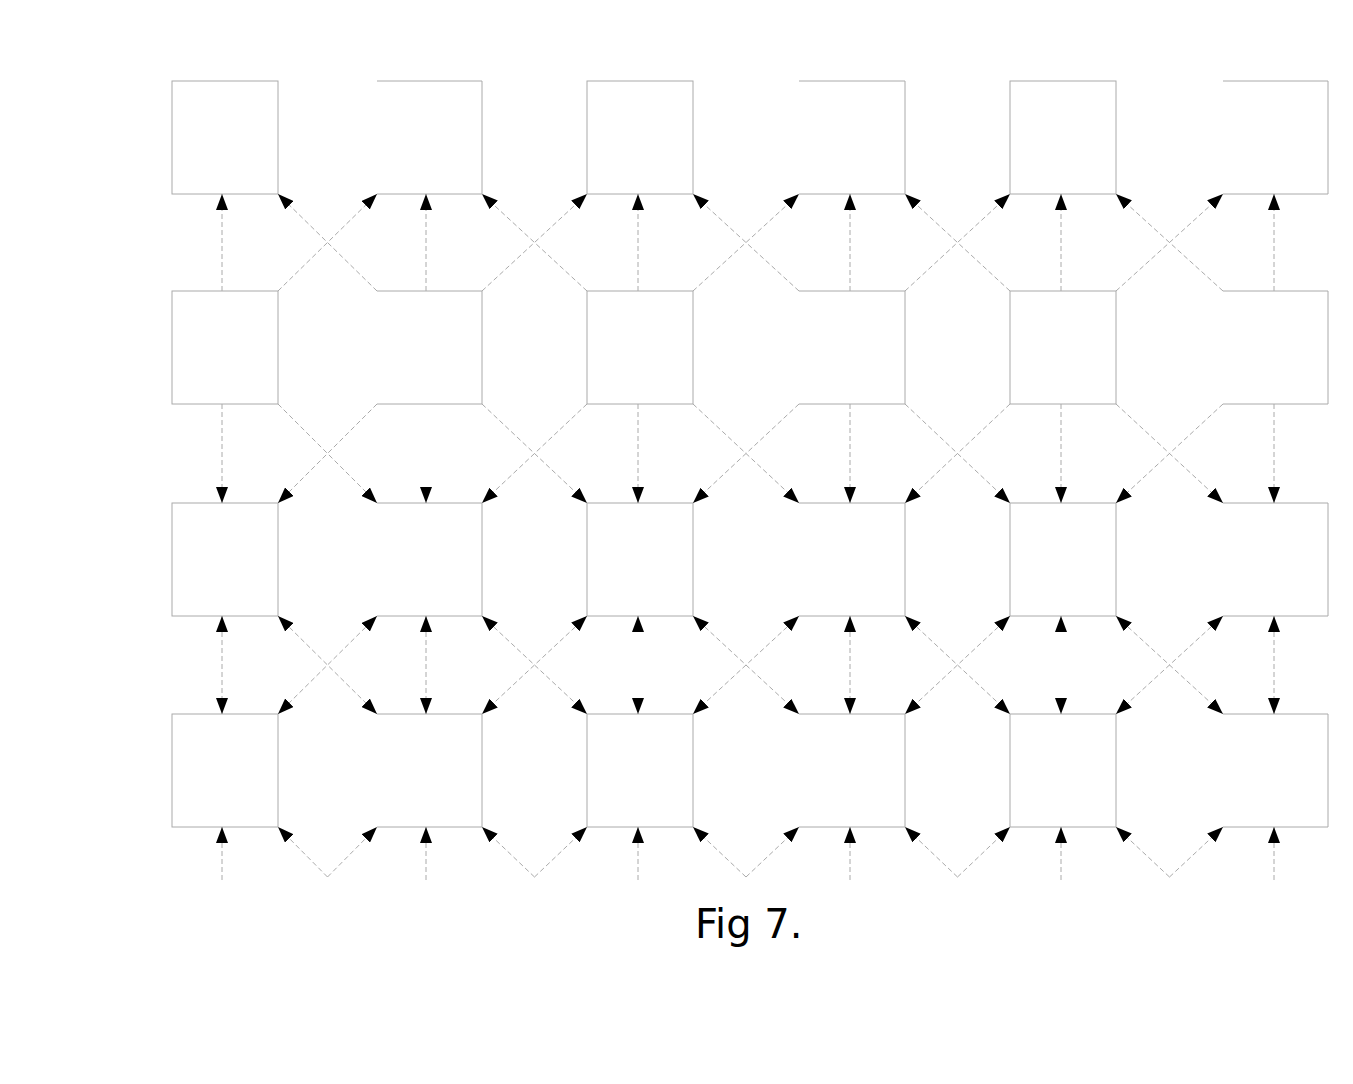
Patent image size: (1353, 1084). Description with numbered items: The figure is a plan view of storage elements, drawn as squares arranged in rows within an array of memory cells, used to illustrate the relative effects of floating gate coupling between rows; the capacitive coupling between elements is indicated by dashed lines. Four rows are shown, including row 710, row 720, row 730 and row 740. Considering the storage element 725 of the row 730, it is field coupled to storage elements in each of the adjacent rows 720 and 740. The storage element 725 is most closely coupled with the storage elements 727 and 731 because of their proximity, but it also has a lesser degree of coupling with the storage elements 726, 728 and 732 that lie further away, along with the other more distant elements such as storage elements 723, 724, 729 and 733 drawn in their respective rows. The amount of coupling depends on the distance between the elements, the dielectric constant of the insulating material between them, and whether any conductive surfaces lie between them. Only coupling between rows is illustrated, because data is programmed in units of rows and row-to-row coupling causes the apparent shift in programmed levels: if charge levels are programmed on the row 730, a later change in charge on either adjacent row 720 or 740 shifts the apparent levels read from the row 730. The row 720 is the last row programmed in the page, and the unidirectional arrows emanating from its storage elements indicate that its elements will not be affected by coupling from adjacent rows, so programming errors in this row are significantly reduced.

The first row of memory pages (page 63) 710 is at (155, 125).
The row 720 is at (166, 336).
The row 730 is at (158, 548).
The row 740 is at (160, 770).
The logical block 723 is at (640, 137).
The logical block 724 is at (852, 137).
The storage element 725 is at (1063, 137).
The storage element 726 is at (621, 359).
The storage element 727 is at (833, 359).
The storage element 728 is at (1044, 359).
The logical block 729 is at (1044, 571).
The storage element 731 is at (833, 782).
The storage element 732 is at (621, 782).
The logical block 733 is at (621, 571).